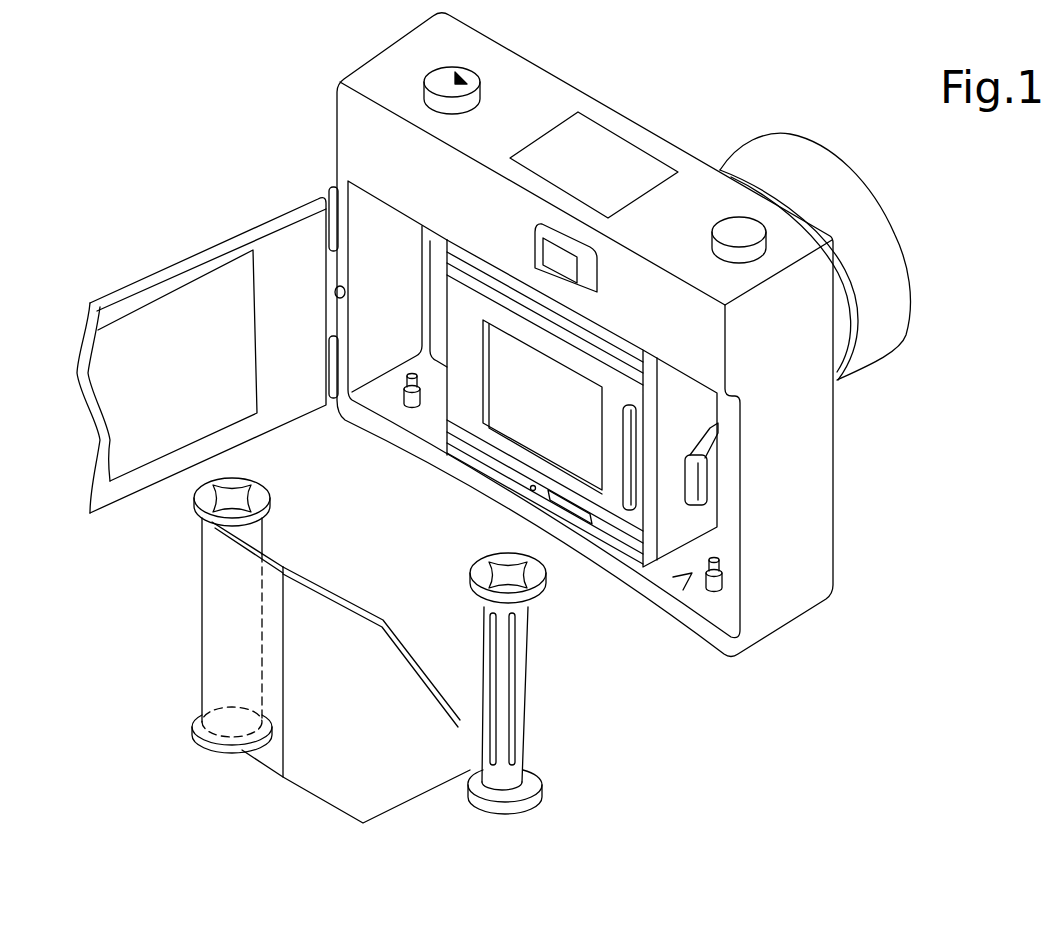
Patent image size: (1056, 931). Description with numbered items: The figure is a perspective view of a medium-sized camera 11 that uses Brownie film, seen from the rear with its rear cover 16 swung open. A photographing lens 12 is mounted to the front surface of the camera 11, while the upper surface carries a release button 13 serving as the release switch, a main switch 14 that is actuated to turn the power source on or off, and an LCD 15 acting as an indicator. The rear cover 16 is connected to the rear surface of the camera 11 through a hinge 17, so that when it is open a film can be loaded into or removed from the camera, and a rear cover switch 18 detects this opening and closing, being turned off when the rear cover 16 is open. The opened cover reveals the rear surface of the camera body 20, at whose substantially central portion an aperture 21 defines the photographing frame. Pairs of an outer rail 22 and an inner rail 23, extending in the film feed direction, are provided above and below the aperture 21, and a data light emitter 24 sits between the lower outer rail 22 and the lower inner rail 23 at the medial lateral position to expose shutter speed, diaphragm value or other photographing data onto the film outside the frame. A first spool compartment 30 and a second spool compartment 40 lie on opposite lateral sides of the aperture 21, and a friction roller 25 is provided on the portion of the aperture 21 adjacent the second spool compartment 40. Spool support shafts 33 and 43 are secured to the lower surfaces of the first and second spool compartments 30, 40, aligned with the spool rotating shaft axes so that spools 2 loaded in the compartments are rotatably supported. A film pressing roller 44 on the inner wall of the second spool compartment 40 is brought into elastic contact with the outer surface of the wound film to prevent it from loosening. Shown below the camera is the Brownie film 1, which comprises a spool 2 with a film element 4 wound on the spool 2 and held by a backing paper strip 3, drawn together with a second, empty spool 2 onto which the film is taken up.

The Brownie film 1 is at (374, 655).
The spool 2 is at (202, 500).
The backing paper strip 3 is at (343, 792).
The film element 4 is at (217, 667).
The camera 11 is at (533, 106).
The photographing lens 12 is at (845, 222).
The release button 13 is at (745, 235).
The main switch 14 is at (447, 78).
The LCD 15 is at (600, 153).
The rear cover 16 is at (172, 267).
The hinge 17 is at (328, 234).
The rear cover switch 18 is at (330, 297).
The camera body 20 is at (513, 455).
The aperture 21 is at (597, 473).
The outer rail 22 is at (470, 460).
The inner rail 23 is at (448, 442).
The data light emitter 24 is at (593, 470).
The friction roller 25 is at (633, 437).
The first spool compartment 30 is at (392, 431).
The spool support shaft 33 is at (413, 408).
The second spool compartment 40 is at (690, 575).
The spool support shaft 43 is at (712, 592).
The film pressing roller 44 is at (700, 485).